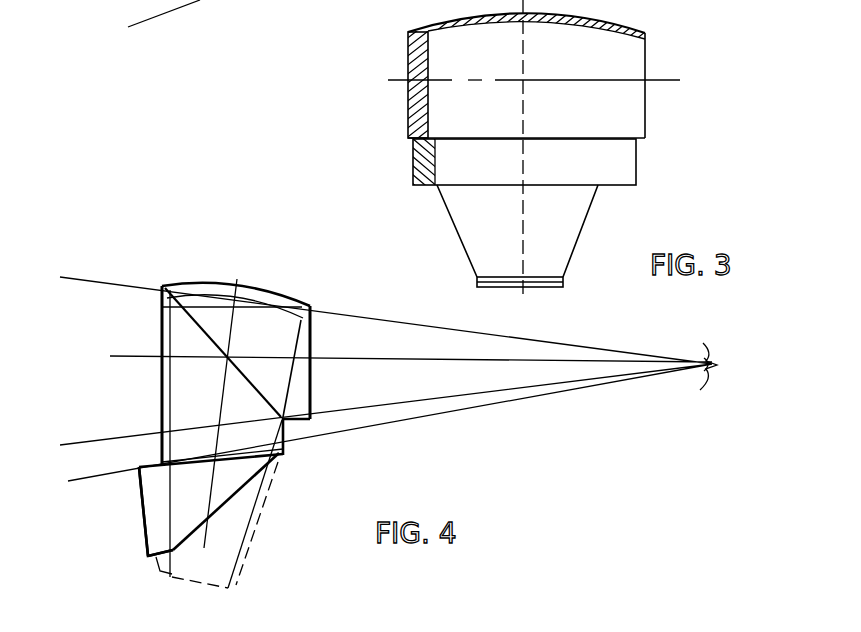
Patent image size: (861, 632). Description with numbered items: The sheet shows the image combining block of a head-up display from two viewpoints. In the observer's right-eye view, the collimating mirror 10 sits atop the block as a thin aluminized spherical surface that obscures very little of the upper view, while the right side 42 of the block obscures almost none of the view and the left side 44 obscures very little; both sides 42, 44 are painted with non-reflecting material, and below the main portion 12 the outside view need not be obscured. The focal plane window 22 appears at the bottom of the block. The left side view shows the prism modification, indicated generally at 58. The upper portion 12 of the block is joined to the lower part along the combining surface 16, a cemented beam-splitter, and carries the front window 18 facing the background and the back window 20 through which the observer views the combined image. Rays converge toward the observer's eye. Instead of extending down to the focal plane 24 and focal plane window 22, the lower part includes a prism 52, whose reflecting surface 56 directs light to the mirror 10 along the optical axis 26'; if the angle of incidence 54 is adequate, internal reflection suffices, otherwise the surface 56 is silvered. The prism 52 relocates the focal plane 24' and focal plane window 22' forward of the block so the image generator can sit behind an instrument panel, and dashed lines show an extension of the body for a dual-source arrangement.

In FIG. 3, the collimating mirror 10 is at (613, 23).
In FIG. 4, the collimating mirror 10 is at (272, 291).
In FIG. 3, the upper portion 12 is at (412, 145).
In FIG. 4, the upper portion 12 is at (276, 348).
In FIG. 4, the combining surface 16 is at (210, 340).
In FIG. 4, the front window 18 is at (161, 406).
In FIG. 4, the back window 20 is at (311, 380).
In FIG. 3, the focal plane window 22 is at (529, 239).
In FIG. 4, the focal plane window 22 is at (263, 541).
In FIG. 4, the relocated focal plane window 22' is at (126, 560).
In FIG. 4, the focal plane 24 is at (181, 595).
In FIG. 4, the relocated focal plane 24' is at (110, 511).
In FIG. 4, the optical axis 26' is at (162, 392).
In FIG. 3, the right side 42 is at (645, 115).
In FIG. 3, the left side 44 is at (408, 106).
In FIG. 4, the prism 52 is at (285, 456).
In FIG. 4, the angle of incidence 54 is at (268, 504).
In FIG. 4, the reflecting surface 56 is at (188, 537).
In FIG. 4, the lens assembly 58 is at (160, 262).